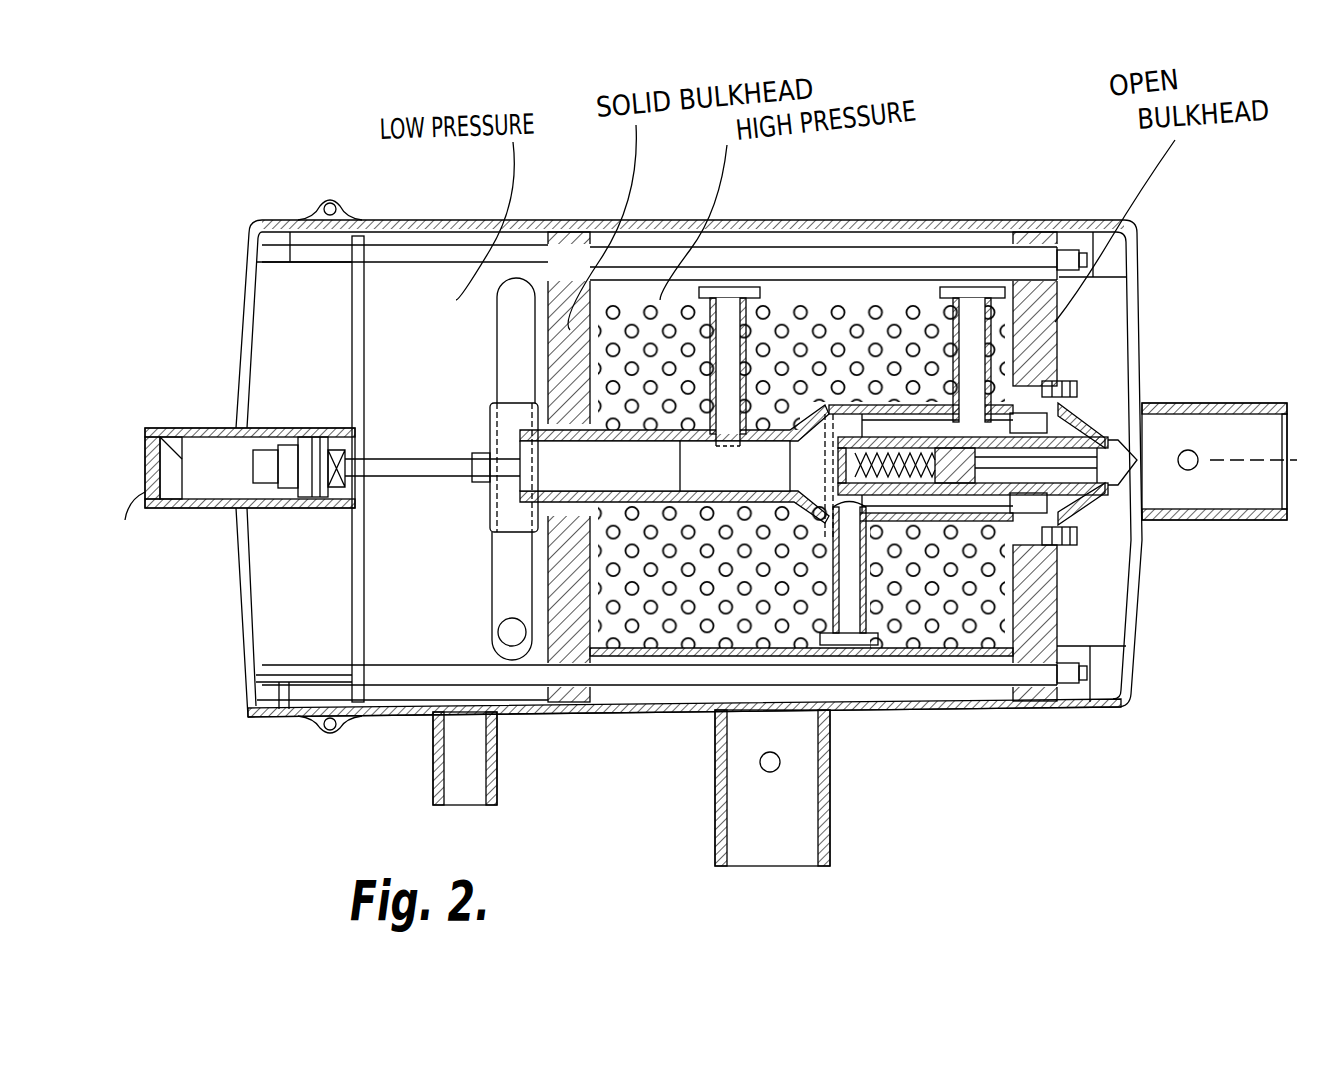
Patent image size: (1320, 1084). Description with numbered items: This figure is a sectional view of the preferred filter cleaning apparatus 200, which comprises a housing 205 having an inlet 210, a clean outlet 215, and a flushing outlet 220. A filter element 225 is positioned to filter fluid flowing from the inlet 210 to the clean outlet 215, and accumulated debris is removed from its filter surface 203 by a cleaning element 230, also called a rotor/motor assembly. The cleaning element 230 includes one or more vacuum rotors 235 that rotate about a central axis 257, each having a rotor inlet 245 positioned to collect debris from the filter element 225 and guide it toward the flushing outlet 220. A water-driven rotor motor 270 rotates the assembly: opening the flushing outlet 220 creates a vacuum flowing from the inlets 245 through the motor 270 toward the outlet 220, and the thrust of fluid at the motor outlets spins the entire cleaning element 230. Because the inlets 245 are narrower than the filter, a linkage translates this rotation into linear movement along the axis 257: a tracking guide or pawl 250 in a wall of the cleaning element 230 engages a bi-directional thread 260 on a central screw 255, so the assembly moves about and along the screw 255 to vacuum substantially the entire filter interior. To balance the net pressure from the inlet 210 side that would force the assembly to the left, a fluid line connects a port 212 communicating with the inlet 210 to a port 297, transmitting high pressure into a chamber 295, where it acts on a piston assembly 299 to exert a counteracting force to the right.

The filter cleaning apparatus 200 is at (297, 197).
The housing 205 is at (420, 236).
The filter element 225 is at (618, 242).
The filter surface 203 is at (820, 280).
The rotor inlet 245 is at (736, 287).
The central screw 255 is at (1063, 442).
The central axis 257 is at (1270, 402).
The rotor motor 270 is at (508, 320).
The chamber 295 is at (168, 458).
The port 297 is at (125, 520).
The piston assembly 299 is at (243, 535).
The cleaning element 230 is at (773, 492).
The bi-directional thread 260 is at (918, 497).
The tracking guide or pawl 250 is at (987, 524).
The vacuum rotor 235 is at (855, 604).
The inlet 210 is at (1268, 497).
The port 212 is at (1185, 472).
The flushing outlet 220 is at (462, 773).
The clean outlet 215 is at (740, 815).